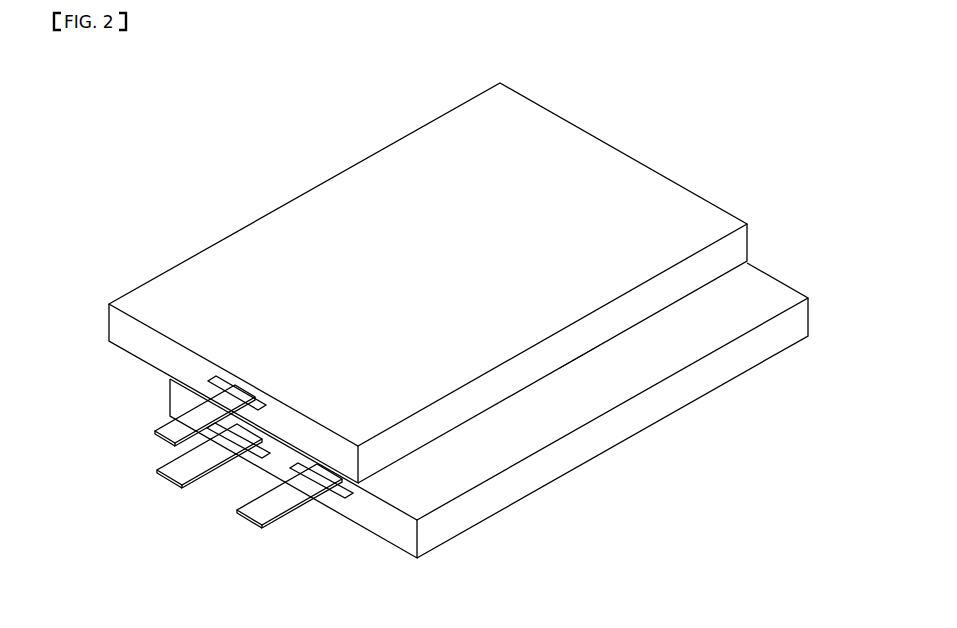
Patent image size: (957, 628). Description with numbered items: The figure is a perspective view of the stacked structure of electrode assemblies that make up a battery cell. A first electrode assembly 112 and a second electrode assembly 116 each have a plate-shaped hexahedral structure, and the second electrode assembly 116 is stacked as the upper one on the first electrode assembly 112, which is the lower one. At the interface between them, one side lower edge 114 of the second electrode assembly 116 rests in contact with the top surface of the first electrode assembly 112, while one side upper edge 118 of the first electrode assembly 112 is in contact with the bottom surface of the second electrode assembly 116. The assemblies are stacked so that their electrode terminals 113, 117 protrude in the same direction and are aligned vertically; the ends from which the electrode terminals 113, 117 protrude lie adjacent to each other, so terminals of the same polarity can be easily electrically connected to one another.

The first electrode assembly 112 is at (757, 300).
The electrode terminal 113 is at (247, 517).
The one side lower edge 114 is at (563, 370).
The second electrode assembly 116 is at (738, 218).
The electrode terminal 117 is at (227, 463).
The one side upper edge 118 is at (168, 380).